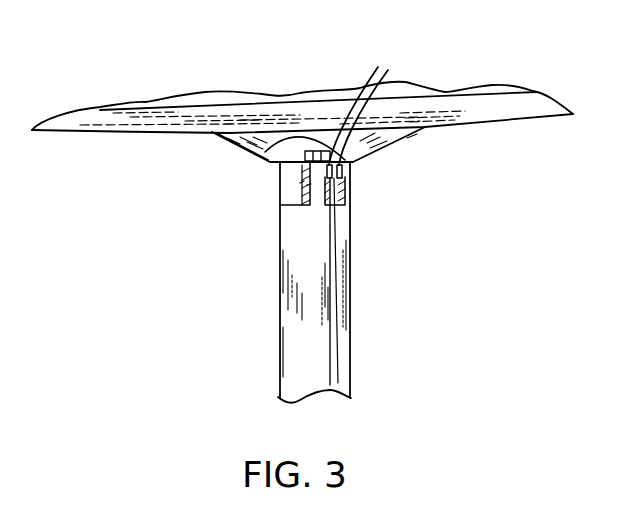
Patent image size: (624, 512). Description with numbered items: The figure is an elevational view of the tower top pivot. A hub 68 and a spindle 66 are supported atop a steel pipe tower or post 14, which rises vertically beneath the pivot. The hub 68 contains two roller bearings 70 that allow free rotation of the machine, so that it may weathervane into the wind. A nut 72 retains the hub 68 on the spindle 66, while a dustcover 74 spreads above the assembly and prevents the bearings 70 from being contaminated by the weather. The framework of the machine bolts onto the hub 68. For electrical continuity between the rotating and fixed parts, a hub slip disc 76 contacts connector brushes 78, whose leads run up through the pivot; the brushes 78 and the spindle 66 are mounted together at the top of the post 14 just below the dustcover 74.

The post 14 is at (344, 282).
The spindle 66 is at (314, 196).
The hub 68 is at (305, 180).
The roller bearings 70 is at (307, 185).
The nut 72 is at (318, 150).
The dustcover 74 is at (218, 143).
The hub slip disc 76 is at (265, 152).
The connector brushes 78 is at (326, 172).